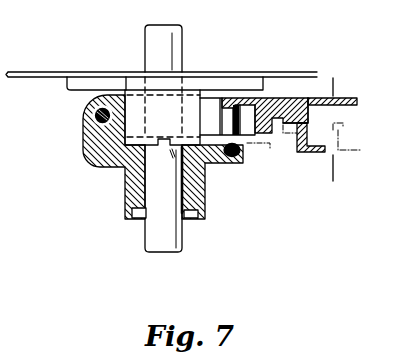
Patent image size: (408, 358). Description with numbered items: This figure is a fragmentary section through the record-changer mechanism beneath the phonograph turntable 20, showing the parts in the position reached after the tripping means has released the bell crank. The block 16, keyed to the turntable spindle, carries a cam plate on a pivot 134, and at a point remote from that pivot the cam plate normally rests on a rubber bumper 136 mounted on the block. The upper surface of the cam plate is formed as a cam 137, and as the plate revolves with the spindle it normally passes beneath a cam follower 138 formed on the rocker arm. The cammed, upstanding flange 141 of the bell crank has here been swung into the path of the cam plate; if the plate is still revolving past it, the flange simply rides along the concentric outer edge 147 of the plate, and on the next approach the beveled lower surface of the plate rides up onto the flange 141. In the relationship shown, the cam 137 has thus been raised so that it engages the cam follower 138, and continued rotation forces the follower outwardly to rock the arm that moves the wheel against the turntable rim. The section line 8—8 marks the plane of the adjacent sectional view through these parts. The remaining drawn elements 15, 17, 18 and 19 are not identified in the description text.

The section line 8— 8 is at (340, 180).
The stem 15 is at (145, 35).
The block 16 is at (124, 186).
The retaining ring groove 17 is at (138, 220).
The housing body right portion 18 is at (207, 183).
The collar 19 is at (196, 104).
The phonograph turntable 20 is at (42, 71).
The pivot 134 is at (96, 115).
The rubber bumper 136 is at (238, 156).
The cam 137 is at (292, 97).
The cam follower 138 is at (364, 103).
The cammed upstanding flange 141 is at (300, 152).
The concentric outer edge 147 is at (312, 111).